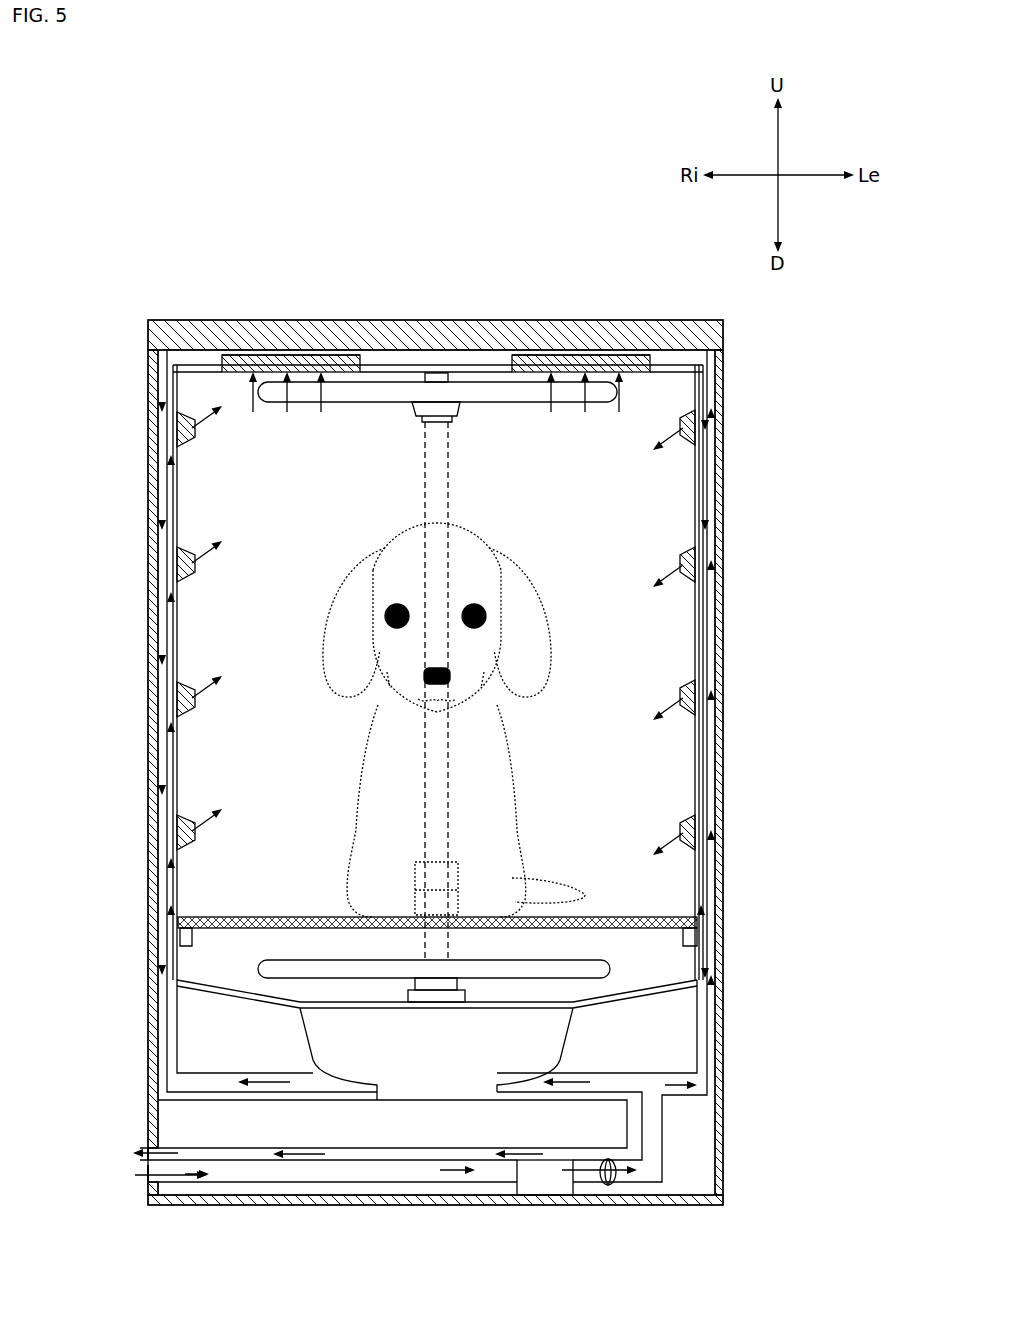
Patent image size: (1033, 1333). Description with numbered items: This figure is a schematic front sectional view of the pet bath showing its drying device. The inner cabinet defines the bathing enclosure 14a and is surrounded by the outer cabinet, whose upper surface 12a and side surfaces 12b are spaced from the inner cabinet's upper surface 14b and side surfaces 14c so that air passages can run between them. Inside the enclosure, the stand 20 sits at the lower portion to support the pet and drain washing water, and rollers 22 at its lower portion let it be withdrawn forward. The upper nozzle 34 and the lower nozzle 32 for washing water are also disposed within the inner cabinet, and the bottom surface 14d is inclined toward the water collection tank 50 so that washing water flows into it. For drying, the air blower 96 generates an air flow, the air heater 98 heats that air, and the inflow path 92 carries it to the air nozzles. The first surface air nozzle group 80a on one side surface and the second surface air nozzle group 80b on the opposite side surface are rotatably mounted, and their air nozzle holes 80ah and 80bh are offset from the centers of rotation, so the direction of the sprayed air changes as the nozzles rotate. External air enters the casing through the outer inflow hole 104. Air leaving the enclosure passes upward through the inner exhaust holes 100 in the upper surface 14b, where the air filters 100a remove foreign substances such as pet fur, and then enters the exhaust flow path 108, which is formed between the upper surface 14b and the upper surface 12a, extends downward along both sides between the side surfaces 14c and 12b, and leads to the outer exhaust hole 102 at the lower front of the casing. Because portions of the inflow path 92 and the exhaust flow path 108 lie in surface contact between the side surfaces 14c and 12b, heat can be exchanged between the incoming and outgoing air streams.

The upper surface of the outer cabinet 12a is at (542, 335).
The side surfaces of the outer cabinet 12b is at (720, 640).
The bathing enclosure 14a is at (624, 548).
The upper surface of the inner cabinet 14b is at (668, 368).
The side surfaces of the inner cabinet 14c is at (697, 605).
The bottom surface of the inner cabinet 14d is at (700, 975).
The stand 20 is at (652, 915).
The rollers 22 is at (700, 932).
The lower nozzle 32 is at (275, 952).
The upper nozzle 34 is at (370, 402).
The water collection tank 50 is at (547, 1040).
The first surface air nozzle group 80a is at (188, 447).
The air nozzle holes 80ah is at (197, 428).
The second surface air nozzle group 80b is at (688, 442).
The air nozzle holes 80bh is at (682, 426).
The inflow path 92 is at (216, 1082).
The air blower 96 is at (610, 1186).
The air heater 98 is at (548, 1185).
The inner exhaust holes 100 is at (353, 355).
The air filters 100a is at (330, 355).
The outer exhaust hole 102 is at (153, 1150).
The outer inflow hole 104 is at (153, 1172).
The exhaust flow path 108 is at (170, 430).